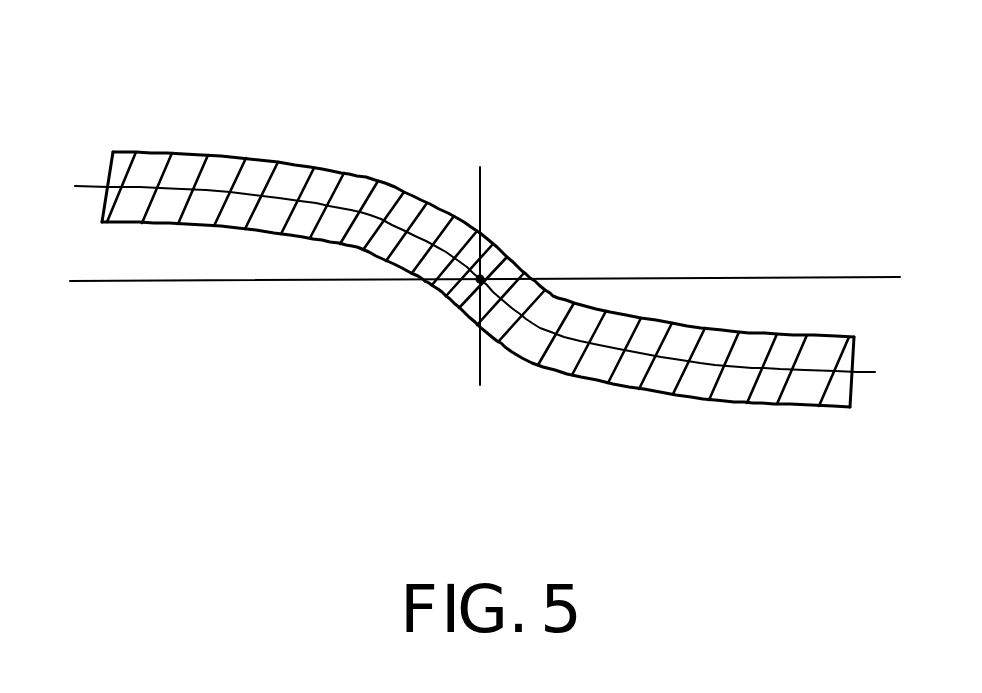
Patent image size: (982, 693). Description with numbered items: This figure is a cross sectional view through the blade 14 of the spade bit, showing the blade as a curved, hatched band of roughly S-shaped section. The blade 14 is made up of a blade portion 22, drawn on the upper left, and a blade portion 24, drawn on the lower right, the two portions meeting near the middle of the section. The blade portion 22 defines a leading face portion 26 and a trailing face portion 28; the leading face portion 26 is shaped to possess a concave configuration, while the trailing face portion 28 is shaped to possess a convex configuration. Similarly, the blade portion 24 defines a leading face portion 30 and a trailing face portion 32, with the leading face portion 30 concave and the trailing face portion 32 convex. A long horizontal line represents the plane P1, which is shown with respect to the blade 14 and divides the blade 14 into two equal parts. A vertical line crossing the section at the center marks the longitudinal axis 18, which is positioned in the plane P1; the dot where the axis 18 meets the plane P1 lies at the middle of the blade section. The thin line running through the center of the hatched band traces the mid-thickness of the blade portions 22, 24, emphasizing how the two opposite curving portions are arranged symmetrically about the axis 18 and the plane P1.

The blade 14 is at (468, 277).
The blade portion 22 is at (260, 163).
The blade portion 24 is at (660, 373).
The leading face portion 26 is at (132, 225).
The trailing face portion 28 is at (270, 158).
The leading face portion 30 is at (772, 334).
The trailing face portion 32 is at (731, 405).
The longitudinal axis 18 is at (480, 279).
The plane P1 is at (760, 277).